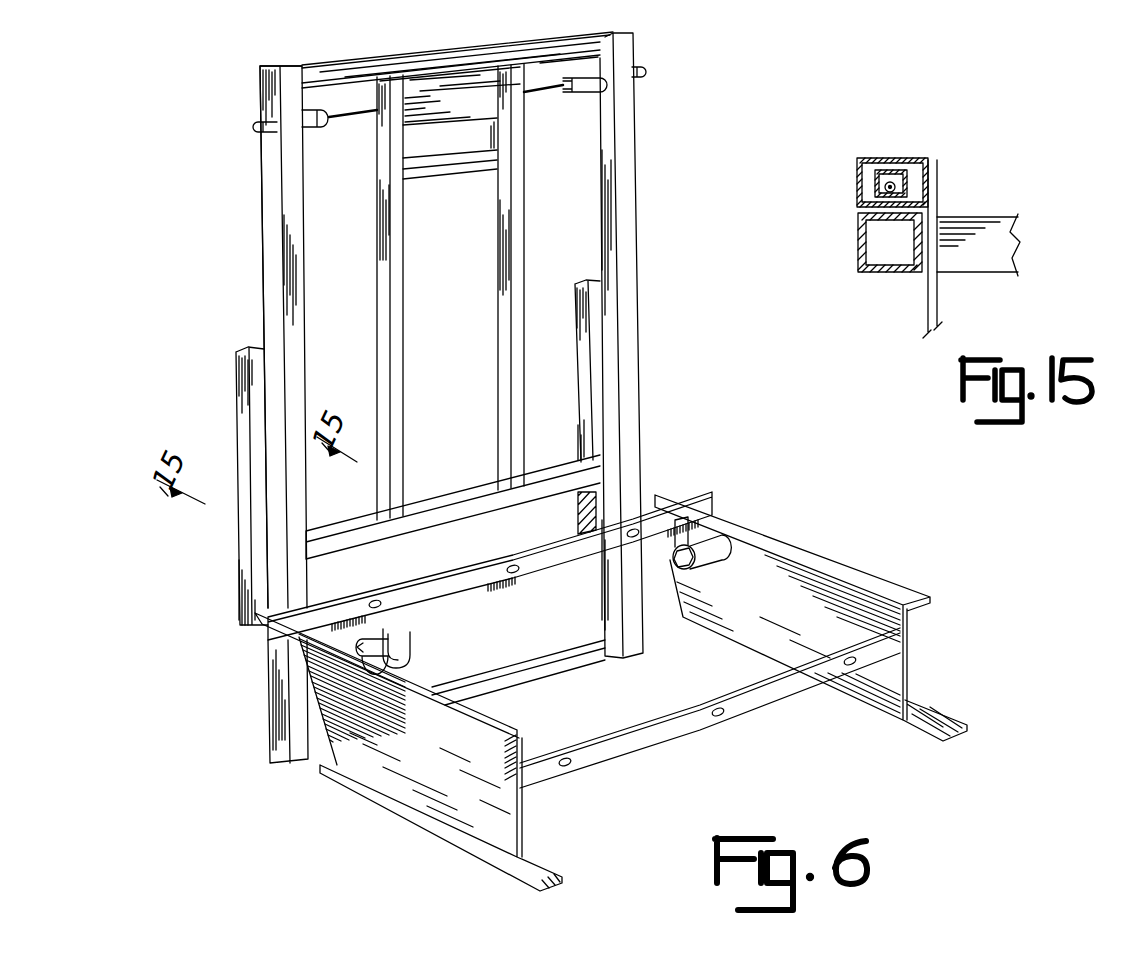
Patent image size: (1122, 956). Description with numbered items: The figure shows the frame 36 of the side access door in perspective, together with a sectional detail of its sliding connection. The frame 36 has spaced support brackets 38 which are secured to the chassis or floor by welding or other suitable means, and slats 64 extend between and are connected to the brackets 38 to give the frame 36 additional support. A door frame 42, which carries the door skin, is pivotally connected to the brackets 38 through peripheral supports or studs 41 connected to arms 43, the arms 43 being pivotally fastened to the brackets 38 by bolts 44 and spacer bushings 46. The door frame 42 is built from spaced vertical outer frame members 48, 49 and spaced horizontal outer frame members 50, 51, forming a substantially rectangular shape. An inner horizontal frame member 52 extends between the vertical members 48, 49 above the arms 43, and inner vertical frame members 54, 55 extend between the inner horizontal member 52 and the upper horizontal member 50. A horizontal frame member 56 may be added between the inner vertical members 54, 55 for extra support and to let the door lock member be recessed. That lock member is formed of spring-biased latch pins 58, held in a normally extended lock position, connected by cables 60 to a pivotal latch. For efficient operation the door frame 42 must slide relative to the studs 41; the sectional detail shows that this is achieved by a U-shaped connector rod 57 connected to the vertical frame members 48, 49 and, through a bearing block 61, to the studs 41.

In FIG. 6, the frame 36 is at (738, 157).
In FIG. 6, the support bracket 38 is at (345, 783).
In FIG. 6, the stud 41 is at (240, 412).
In FIG. 15, the stud 41 is at (857, 180).
In FIG. 6, the door frame 42 is at (258, 184).
In FIG. 6, the arm 43 is at (622, 527).
In FIG. 15, the arm 43 is at (930, 300).
In FIG. 6, the bolt 44 is at (685, 554).
In FIG. 6, the spacer bushing 46 is at (377, 640).
In FIG. 6, the vertical outer frame member 48 is at (266, 247).
In FIG. 15, the vertical outer frame member 48 is at (858, 236).
In FIG. 6, the vertical outer frame member 49 is at (632, 165).
In FIG. 6, the horizontal outer frame member 50 is at (350, 68).
In FIG. 6, the horizontal outer frame member 51 is at (553, 650).
In FIG. 6, the inner horizontal frame member 52 is at (357, 522).
In FIG. 6, the inner vertical frame member 54 is at (398, 270).
In FIG. 6, the inner vertical frame member 55 is at (497, 282).
In FIG. 6, the horizontal frame member 56 is at (468, 178).
In FIG. 15, the U-shaped connector rod 57 is at (893, 172).
In FIG. 6, the latch pin 58 is at (260, 121).
In FIG. 6, the cable 60 is at (354, 114).
In FIG. 15, the bearing block 61 is at (908, 183).
In FIG. 6, the slat 64 is at (490, 576).
In FIG. 15, the slat 64 is at (993, 226).